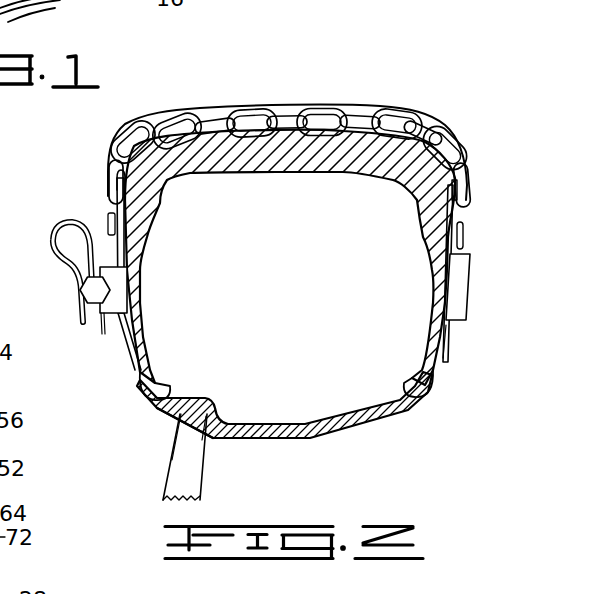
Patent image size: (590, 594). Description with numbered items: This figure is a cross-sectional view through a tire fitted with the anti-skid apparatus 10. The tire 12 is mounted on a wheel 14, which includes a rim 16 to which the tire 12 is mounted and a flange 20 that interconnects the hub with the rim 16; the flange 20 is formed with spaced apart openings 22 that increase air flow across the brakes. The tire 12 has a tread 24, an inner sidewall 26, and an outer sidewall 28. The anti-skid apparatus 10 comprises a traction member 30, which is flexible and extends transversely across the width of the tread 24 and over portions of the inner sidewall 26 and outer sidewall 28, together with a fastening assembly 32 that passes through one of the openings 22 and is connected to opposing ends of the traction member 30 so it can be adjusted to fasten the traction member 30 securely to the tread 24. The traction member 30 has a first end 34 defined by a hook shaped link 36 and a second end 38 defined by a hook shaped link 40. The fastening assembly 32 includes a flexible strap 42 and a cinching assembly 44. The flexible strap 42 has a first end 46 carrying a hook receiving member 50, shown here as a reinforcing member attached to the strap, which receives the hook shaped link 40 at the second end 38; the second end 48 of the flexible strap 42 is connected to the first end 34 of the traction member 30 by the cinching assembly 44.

The anti-skid apparatus 10 is at (295, 139).
The tire 12 is at (433, 353).
The wheel 14 is at (200, 490).
The rim 16 is at (360, 407).
The flange 20 is at (165, 490).
The openings 22 is at (198, 468).
The tread 24 is at (217, 137).
The inner sidewall 26 is at (452, 211).
The outer sidewall 28 is at (114, 202).
The traction member 30 is at (287, 103).
The fastening assembly 32 is at (127, 371).
The first end 34 is at (108, 190).
The hook shaped link 36 is at (88, 222).
The second end 38 is at (455, 205).
The hook shaped link 40 is at (465, 232).
The flexible strap 42 is at (170, 417).
The cinching assembly 44 is at (75, 291).
The first end 46 is at (446, 334).
The second end 48 is at (106, 336).
The hook receiving member 50 is at (466, 283).